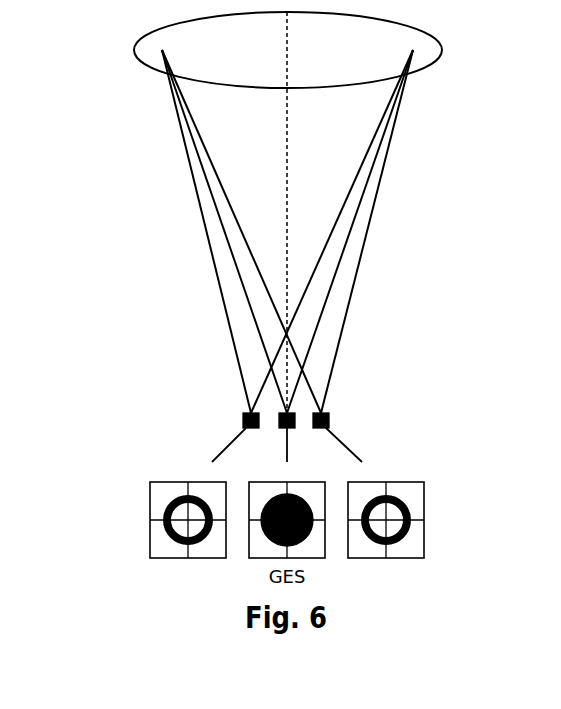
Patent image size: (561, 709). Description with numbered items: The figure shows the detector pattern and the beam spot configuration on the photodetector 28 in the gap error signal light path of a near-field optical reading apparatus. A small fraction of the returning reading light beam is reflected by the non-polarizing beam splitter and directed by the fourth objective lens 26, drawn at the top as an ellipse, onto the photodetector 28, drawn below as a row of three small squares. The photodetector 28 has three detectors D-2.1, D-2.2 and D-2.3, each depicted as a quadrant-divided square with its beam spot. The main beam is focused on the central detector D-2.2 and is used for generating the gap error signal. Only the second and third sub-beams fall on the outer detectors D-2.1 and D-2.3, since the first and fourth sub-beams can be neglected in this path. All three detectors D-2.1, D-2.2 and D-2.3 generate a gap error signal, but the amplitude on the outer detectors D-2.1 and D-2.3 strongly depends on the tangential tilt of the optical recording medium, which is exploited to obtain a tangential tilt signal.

The fourth objective lens 26 is at (140, 72).
The photodetector 28 is at (338, 400).
The detector D-2.1 is at (188, 509).
The detector D-2.2 is at (287, 509).
The detector D-2.3 is at (386, 509).